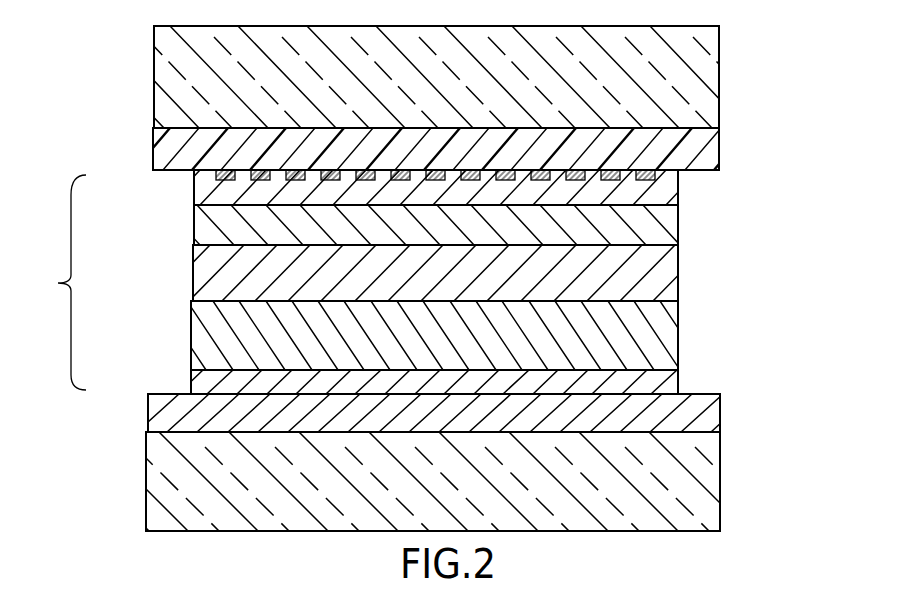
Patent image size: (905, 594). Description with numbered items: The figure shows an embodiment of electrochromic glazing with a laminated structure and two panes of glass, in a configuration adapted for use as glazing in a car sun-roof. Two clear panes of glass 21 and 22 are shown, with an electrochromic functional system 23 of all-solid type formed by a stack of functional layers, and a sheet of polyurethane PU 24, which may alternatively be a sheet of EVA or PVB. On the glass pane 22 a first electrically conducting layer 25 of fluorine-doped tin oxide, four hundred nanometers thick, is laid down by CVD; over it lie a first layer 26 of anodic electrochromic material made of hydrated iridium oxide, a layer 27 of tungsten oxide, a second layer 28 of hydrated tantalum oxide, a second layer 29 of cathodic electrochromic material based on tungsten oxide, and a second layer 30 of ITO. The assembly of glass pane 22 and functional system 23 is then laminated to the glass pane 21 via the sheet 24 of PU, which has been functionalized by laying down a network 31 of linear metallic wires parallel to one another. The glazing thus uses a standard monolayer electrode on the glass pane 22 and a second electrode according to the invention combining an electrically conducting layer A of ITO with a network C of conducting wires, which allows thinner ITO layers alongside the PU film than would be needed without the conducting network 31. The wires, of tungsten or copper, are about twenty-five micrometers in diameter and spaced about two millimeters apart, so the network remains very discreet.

The clear pane of glass 21 is at (705, 88).
The clear pane of glass 22 is at (705, 496).
The electrochromic functional system 23 is at (52, 282).
The sheet of polyurethane PU 24 is at (703, 152).
The first electrically conducting layer 25 is at (705, 402).
The first layer of anodic electrochromic material 26 is at (665, 380).
The layer of tungsten oxide 27 is at (663, 346).
The second layer of hydrated tantalum oxide 28 is at (666, 272).
The second layer of cathodic electrochromic material 29 is at (660, 222).
The second layer of ITO 30 is at (665, 188).
The network of linear metallic wires 31 is at (226, 180).
The electrically conducting layer A is at (157, 145).
The network of conducting wires or conducting strips C is at (133, 231).